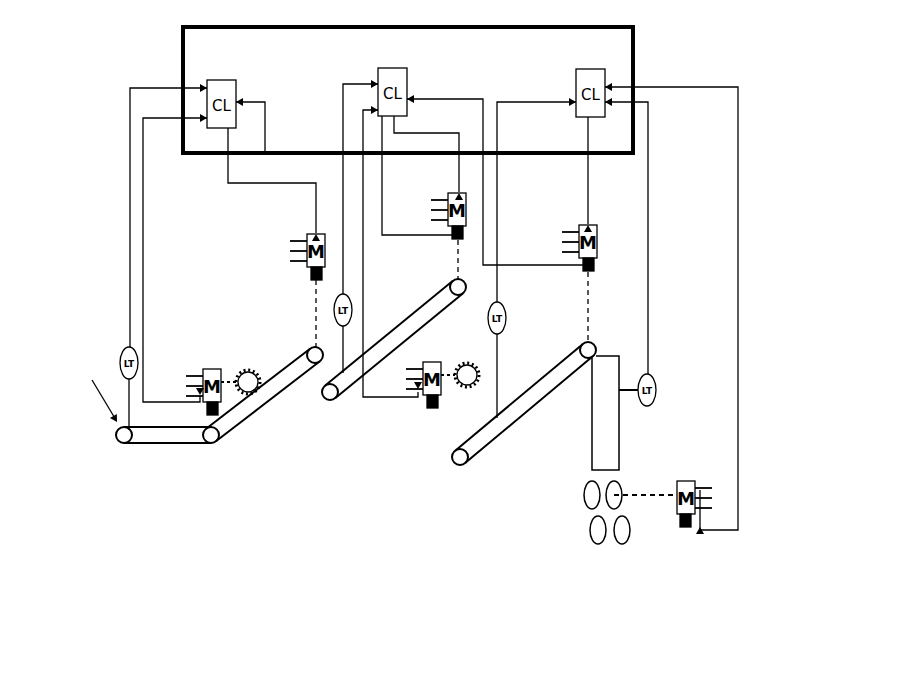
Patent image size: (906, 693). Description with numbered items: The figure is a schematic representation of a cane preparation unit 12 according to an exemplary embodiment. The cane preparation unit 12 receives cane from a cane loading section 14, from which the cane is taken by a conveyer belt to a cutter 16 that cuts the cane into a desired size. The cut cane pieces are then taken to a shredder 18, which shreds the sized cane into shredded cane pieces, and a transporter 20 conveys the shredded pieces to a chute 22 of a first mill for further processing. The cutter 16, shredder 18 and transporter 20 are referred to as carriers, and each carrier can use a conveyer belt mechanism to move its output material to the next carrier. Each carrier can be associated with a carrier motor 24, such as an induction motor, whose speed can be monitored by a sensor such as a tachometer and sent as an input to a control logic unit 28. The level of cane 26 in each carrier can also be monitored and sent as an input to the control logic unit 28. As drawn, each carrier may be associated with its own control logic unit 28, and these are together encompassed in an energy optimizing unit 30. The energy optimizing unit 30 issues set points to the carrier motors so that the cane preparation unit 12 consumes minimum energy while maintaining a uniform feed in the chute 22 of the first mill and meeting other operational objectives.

The cane preparation unit 12 is at (785, 50).
The cane loading section 14 is at (120, 455).
The cutter 16 is at (253, 428).
The shredder 18 is at (448, 408).
The transporter 20 is at (541, 413).
The chute 22 is at (588, 443).
The carrier motor 24 is at (303, 275).
The level of cane (LT) 26 is at (117, 378).
The control logic unit 28 is at (205, 86).
The energy optimizing unit 30 is at (180, 48).